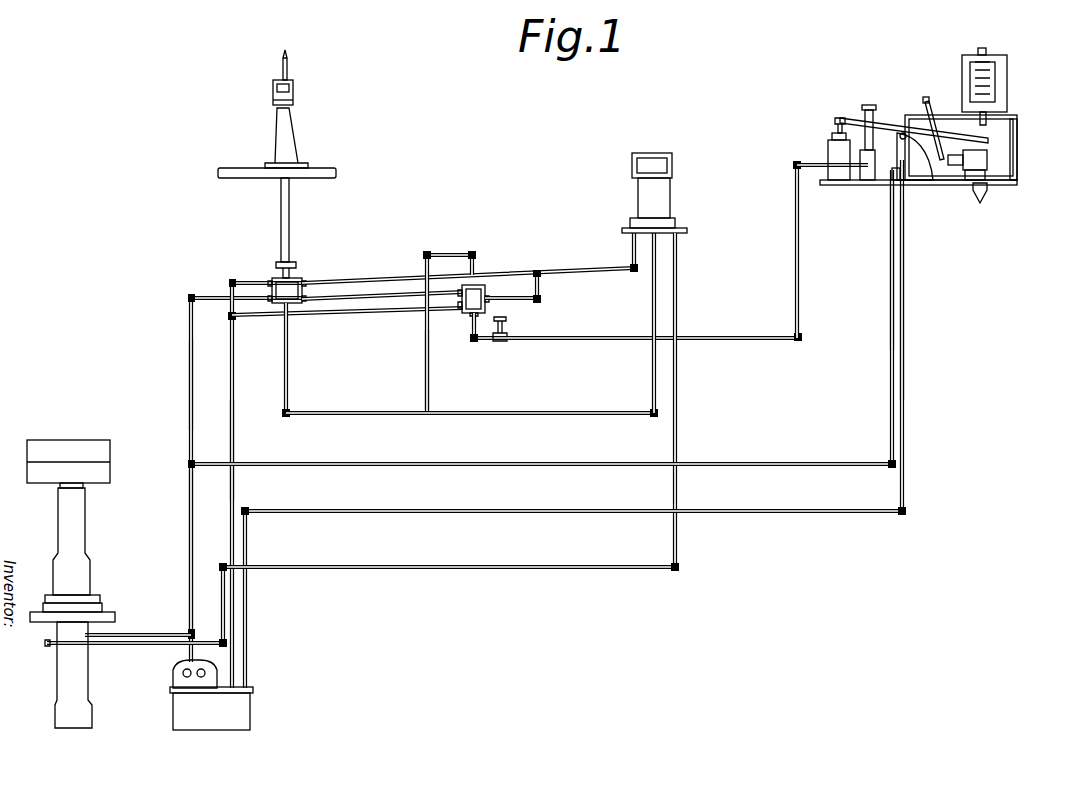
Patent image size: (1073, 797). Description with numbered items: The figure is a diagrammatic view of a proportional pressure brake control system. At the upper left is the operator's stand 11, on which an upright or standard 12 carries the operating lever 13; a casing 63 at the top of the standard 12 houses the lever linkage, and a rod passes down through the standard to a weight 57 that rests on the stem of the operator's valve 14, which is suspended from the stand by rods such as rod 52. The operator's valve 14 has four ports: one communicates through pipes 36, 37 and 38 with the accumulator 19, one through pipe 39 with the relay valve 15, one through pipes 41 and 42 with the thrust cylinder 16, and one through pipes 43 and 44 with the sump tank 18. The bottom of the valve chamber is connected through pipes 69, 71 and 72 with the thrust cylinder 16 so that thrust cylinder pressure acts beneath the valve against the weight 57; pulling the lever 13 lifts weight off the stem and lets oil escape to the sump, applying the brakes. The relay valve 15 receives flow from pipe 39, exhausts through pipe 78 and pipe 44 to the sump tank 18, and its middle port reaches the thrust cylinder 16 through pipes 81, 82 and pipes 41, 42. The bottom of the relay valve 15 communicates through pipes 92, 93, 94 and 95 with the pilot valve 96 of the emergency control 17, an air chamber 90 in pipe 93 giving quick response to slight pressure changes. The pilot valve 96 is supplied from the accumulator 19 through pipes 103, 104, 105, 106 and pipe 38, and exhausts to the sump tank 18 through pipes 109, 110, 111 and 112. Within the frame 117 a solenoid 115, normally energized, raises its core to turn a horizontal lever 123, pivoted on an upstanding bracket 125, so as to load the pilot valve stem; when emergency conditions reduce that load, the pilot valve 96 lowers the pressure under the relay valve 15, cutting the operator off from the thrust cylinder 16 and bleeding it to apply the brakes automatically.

The operator's stand 11 is at (312, 172).
The upright or standard 12 is at (296, 133).
The operating lever 13 is at (290, 62).
The operator's valve 14 is at (300, 290).
The relay valve 15 is at (484, 292).
The thrust cylinder 16 is at (638, 190).
The emergency control 17 is at (912, 115).
The sump tank 18 is at (255, 690).
The accumulator 19 is at (88, 530).
The pipe 36 is at (210, 298).
The pipe 37 is at (190, 380).
The pipe 38 is at (135, 633).
The pipe 39 is at (380, 313).
The pipe 41 is at (415, 280).
The pipe 42 is at (633, 250).
The pipe 43 is at (247, 282).
The pipe 44 is at (234, 430).
The rod 52 is at (290, 222).
The weight 57 is at (292, 262).
The casing 63 is at (288, 92).
The pipe 69 is at (288, 382).
The pipe 71 is at (360, 416).
The pipe 72 is at (652, 365).
The pipe 78 is at (413, 318).
The pipe 81 is at (506, 300).
The pipe 82 is at (540, 292).
The air chamber 90 is at (505, 330).
The pipe 92 is at (470, 330).
The pipe 93 is at (585, 340).
The pipe 94 is at (795, 262).
The pipe 95 is at (800, 162).
The pilot valve 96 is at (835, 183).
The pipe 103 is at (865, 190).
The pipe 104 is at (890, 275).
The pipe 105 is at (755, 464).
The pipe 106 is at (190, 523).
The pipe 109 is at (905, 184).
The pipe 110 is at (903, 320).
The pipe 111 is at (790, 513).
The pipe 112 is at (250, 617).
The solenoid 115 is at (1000, 75).
The frame 117 is at (1017, 140).
The horizontal lever 123 is at (945, 110).
The upstanding bracket 125 is at (888, 140).